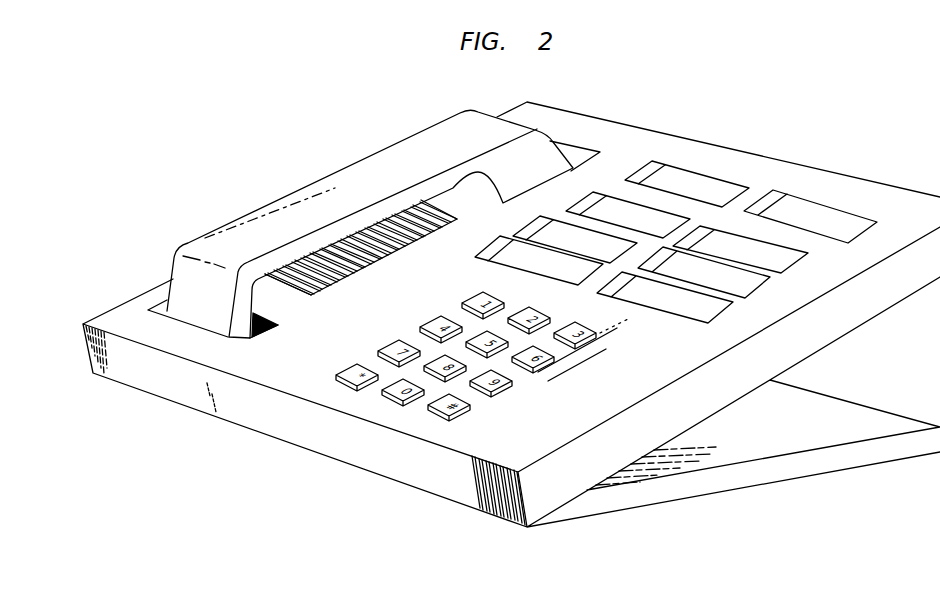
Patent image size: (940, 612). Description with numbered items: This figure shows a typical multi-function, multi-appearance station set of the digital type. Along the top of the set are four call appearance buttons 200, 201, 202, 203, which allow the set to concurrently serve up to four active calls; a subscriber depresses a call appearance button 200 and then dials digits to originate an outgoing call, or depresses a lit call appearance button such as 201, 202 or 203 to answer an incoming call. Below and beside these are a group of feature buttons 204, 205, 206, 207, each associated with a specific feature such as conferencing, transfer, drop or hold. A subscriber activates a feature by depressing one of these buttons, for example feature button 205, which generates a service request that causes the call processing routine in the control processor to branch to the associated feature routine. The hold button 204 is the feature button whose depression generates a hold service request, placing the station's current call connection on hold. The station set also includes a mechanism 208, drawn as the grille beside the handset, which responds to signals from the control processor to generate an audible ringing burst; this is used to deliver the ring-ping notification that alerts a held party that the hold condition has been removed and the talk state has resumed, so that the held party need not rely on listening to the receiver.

The call appearance button 200 is at (674, 163).
The call appearance button 201 is at (573, 207).
The call appearance button 202 is at (879, 223).
The call appearance button 203 is at (809, 263).
The hold button 204 is at (522, 228).
The feature button 205 is at (488, 256).
The feature button 206 is at (758, 293).
The feature button 207 is at (717, 320).
The mechanism for generating an audible ringing burst 208 is at (355, 272).